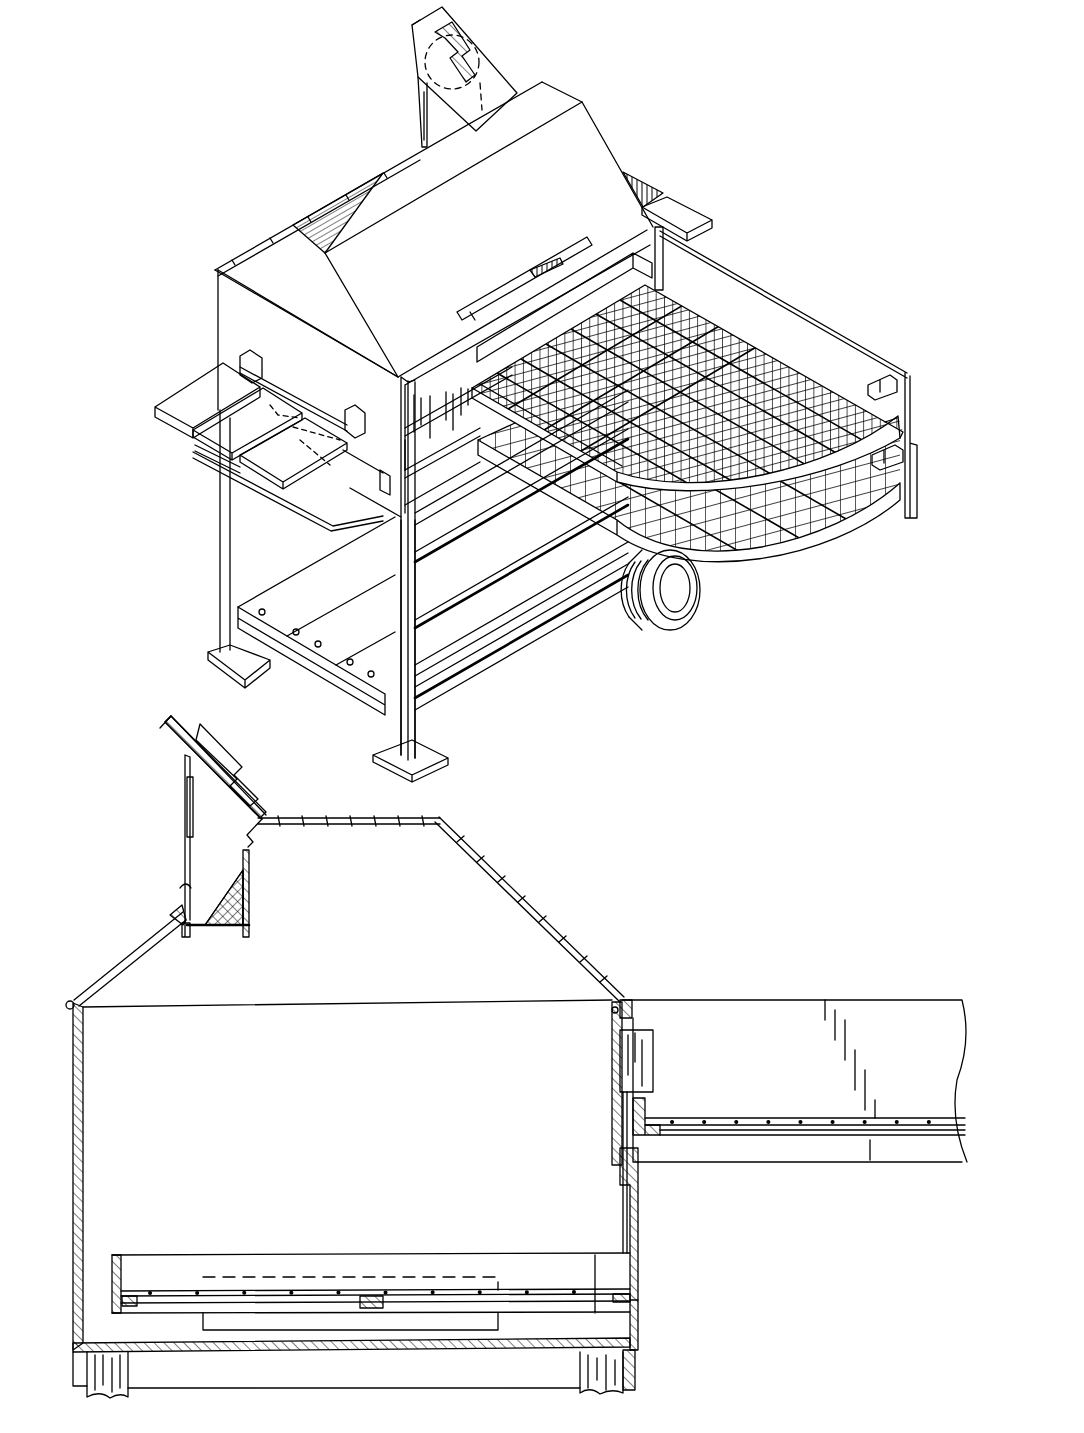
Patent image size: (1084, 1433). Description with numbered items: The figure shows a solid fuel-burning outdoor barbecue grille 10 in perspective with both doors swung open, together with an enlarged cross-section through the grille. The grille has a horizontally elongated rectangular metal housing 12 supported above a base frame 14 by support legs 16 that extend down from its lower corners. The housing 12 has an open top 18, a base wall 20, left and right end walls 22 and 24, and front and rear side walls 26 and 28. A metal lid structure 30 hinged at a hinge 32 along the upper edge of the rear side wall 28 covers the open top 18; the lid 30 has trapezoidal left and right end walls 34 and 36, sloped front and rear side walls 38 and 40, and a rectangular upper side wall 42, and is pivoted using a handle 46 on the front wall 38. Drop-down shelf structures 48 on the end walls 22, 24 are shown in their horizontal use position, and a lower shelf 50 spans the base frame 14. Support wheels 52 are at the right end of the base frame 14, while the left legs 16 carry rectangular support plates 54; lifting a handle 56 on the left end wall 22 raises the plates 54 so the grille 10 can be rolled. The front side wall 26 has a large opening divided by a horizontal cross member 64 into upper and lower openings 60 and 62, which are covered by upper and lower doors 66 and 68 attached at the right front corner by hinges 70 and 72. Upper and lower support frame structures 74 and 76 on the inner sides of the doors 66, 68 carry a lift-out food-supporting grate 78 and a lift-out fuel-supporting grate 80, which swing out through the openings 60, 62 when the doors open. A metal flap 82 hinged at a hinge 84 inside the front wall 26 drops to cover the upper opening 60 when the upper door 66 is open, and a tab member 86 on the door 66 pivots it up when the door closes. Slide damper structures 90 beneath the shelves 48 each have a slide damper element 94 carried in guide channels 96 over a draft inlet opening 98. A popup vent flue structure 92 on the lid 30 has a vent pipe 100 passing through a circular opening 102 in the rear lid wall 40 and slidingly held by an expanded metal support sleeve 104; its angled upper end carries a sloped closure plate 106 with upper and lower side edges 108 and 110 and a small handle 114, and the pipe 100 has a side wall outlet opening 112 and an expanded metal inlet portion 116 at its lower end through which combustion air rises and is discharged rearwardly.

In FIG. 4, the barbecue grille 10 is at (630, 77).
In FIG. 6, the barbecue grille 10 is at (594, 859).
In FIG. 4, the housing 12 is at (214, 302).
In FIG. 6, the housing 12 is at (66, 1206).
In FIG. 4, the base frame 14 is at (532, 646).
In FIG. 4, the support legs 16 is at (222, 508).
In FIG. 6, the support legs 16 is at (129, 1380).
In FIG. 4, the open top 18 is at (292, 306).
In FIG. 6, the open top 18 is at (357, 1005).
In FIG. 4, the base wall 20 is at (432, 500).
In FIG. 6, the base wall 20 is at (293, 1356).
In FIG. 4, the left end wall 22 is at (232, 325).
In FIG. 6, the right end wall 24 is at (372, 1142).
In FIG. 4, the front side wall 26 is at (401, 403).
In FIG. 6, the front side wall 26 is at (637, 1378).
In FIG. 6, the rear side wall 28 is at (75, 1148).
In FIG. 4, the lid structure 30 is at (605, 121).
In FIG. 6, the lid structure 30 is at (564, 921).
In FIG. 4, the hinge 32 is at (232, 262).
In FIG. 6, the hinge 32 is at (72, 1000).
In FIG. 4, the left end wall of lid 34 is at (331, 304).
In FIG. 6, the right end wall of lid 36 is at (363, 894).
In FIG. 4, the front side wall of lid 38 is at (493, 222).
In FIG. 6, the front side wall of lid 38 is at (489, 866).
In FIG. 6, the rear side wall of lid 40 is at (141, 933).
In FIG. 4, the upper side wall of lid 42 is at (430, 189).
In FIG. 6, the upper side wall of lid 42 is at (321, 815).
In FIG. 4, the handle 46 is at (551, 257).
In FIG. 4, the drop-down shelf structures 48 is at (165, 402).
In FIG. 4, the lower shelf 50 is at (319, 582).
In FIG. 4, the support wheels 52 is at (698, 603).
In FIG. 4, the support plates 54 is at (239, 682).
In FIG. 4, the handle 56 is at (313, 520).
In FIG. 4, the upper opening 60 is at (430, 392).
In FIG. 6, the upper opening 60 is at (616, 1125).
In FIG. 4, the lower opening 62 is at (411, 477).
In FIG. 6, the lower opening 62 is at (627, 1216).
In FIG. 4, the horizontal cross member 64 is at (404, 440).
In FIG. 4, the upper door 66 is at (775, 334).
In FIG. 6, the upper door 66 is at (770, 1061).
In FIG. 4, the lower door 68 is at (912, 508).
In FIG. 6, the lower door 68 is at (640, 1288).
In FIG. 4, the hinge 70 is at (700, 212).
In FIG. 4, the hinge 72 is at (903, 465).
In FIG. 4, the upper support frame structure 74 is at (894, 428).
In FIG. 6, the upper support frame structure 74 is at (657, 1137).
In FIG. 4, the lower support frame structure 76 is at (838, 530).
In FIG. 6, the lower support frame structure 76 is at (125, 1270).
In FIG. 4, the food-supporting grate 78 is at (776, 378).
In FIG. 6, the food-supporting grate 78 is at (770, 1117).
In FIG. 4, the fuel-supporting grate 80 is at (794, 522).
In FIG. 6, the fuel-supporting grate 80 is at (171, 1282).
In FIG. 4, the flap 82 is at (447, 372).
In FIG. 6, the flap 82 is at (610, 1060).
In FIG. 6, the hinge 84 is at (624, 994).
In FIG. 4, the tab member 86 is at (565, 332).
In FIG. 6, the tab member 86 is at (652, 1060).
In FIG. 4, the slide damper structures 90 is at (288, 452).
In FIG. 6, the slide damper structures 90 is at (355, 1328).
In FIG. 4, the popup vent flue structure 92 is at (505, 42).
In FIG. 6, the popup vent flue structure 92 is at (173, 776).
In FIG. 4, the slide damper element 94 is at (363, 481).
In FIG. 6, the slide damper element 94 is at (206, 1322).
In FIG. 4, the guide channels 96 is at (286, 395).
In FIG. 4, the draft inlet opening 98 is at (282, 417).
In FIG. 6, the draft inlet opening 98 is at (419, 1326).
In FIG. 4, the vent pipe 100 is at (426, 128).
In FIG. 6, the vent pipe 100 is at (197, 858).
In FIG. 6, the circular opening 102 is at (186, 884).
In FIG. 6, the support sleeve 104 is at (251, 941).
In FIG. 4, the closure plate 106 is at (495, 80).
In FIG. 6, the closure plate 106 is at (198, 728).
In FIG. 4, the upper side edge 108 is at (422, 20).
In FIG. 6, the upper side edge 108 is at (166, 727).
In FIG. 4, the lower side edge 110 is at (496, 98).
In FIG. 6, the lower side edge 110 is at (263, 826).
In FIG. 4, the side wall outlet opening 112 is at (418, 104).
In FIG. 6, the side wall outlet opening 112 is at (186, 820).
In FIG. 4, the handle 114 is at (468, 40).
In FIG. 6, the handle 114 is at (219, 750).
In FIG. 6, the inlet portion 116 is at (231, 930).